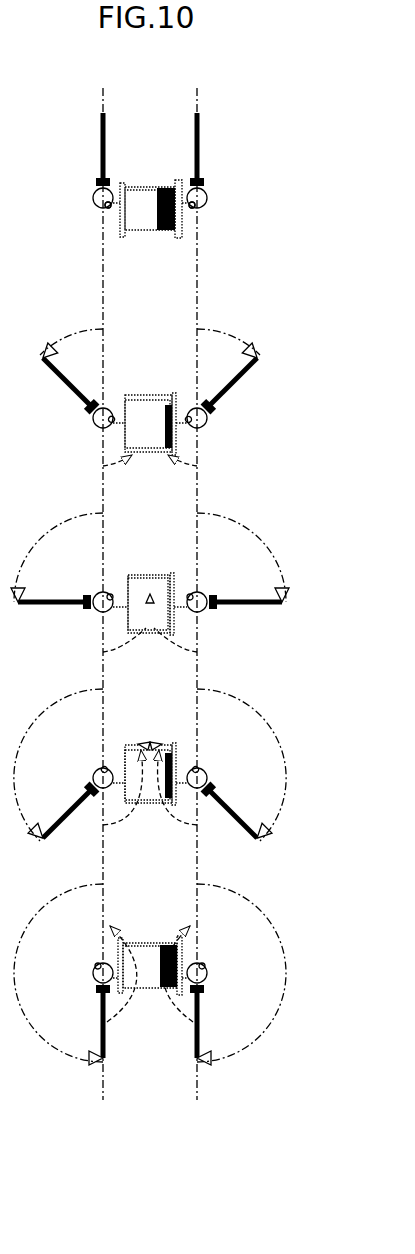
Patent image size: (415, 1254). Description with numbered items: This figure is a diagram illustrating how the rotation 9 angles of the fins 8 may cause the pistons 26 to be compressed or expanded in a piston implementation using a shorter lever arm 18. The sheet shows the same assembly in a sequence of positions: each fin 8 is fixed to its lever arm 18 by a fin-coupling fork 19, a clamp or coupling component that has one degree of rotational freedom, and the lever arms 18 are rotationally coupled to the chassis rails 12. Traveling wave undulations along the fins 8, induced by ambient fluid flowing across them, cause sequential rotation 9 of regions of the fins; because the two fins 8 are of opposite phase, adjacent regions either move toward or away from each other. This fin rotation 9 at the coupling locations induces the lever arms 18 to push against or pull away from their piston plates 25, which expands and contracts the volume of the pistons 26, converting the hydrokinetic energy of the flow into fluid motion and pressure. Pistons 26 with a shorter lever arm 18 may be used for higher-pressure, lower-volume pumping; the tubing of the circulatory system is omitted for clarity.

The fins 8 is at (193, 138).
The rotation 9 is at (223, 333).
The chassis rails 12 is at (90, 198).
The lever arm 18 is at (101, 208).
The fin-coupling fork 19 is at (98, 177).
The piston plates 25 is at (118, 226).
The pistons 26 is at (144, 212).